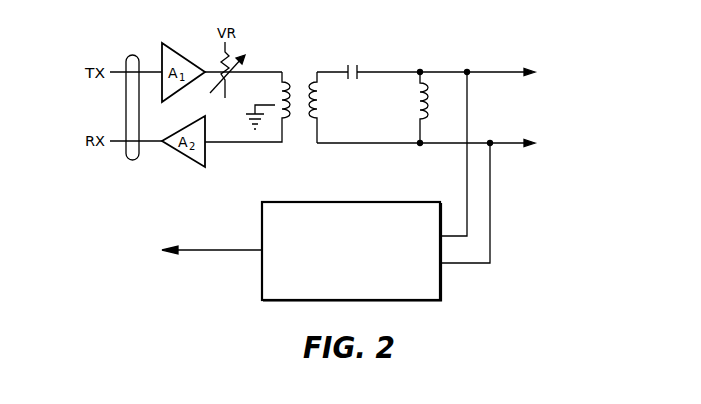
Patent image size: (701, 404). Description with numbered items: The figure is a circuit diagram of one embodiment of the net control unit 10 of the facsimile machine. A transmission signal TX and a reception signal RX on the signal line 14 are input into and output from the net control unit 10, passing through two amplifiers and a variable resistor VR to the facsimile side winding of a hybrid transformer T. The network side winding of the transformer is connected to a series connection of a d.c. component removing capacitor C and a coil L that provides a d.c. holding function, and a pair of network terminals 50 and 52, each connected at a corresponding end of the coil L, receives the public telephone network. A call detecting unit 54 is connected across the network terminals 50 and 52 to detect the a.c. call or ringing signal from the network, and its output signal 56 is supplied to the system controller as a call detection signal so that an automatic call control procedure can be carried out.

The net control unit 10 is at (307, 30).
The signal line 14 is at (130, 55).
The network terminal 50 is at (443, 71).
The network terminal 52 is at (515, 144).
The call detecting unit 54 is at (386, 207).
The output signal 56 is at (213, 247).